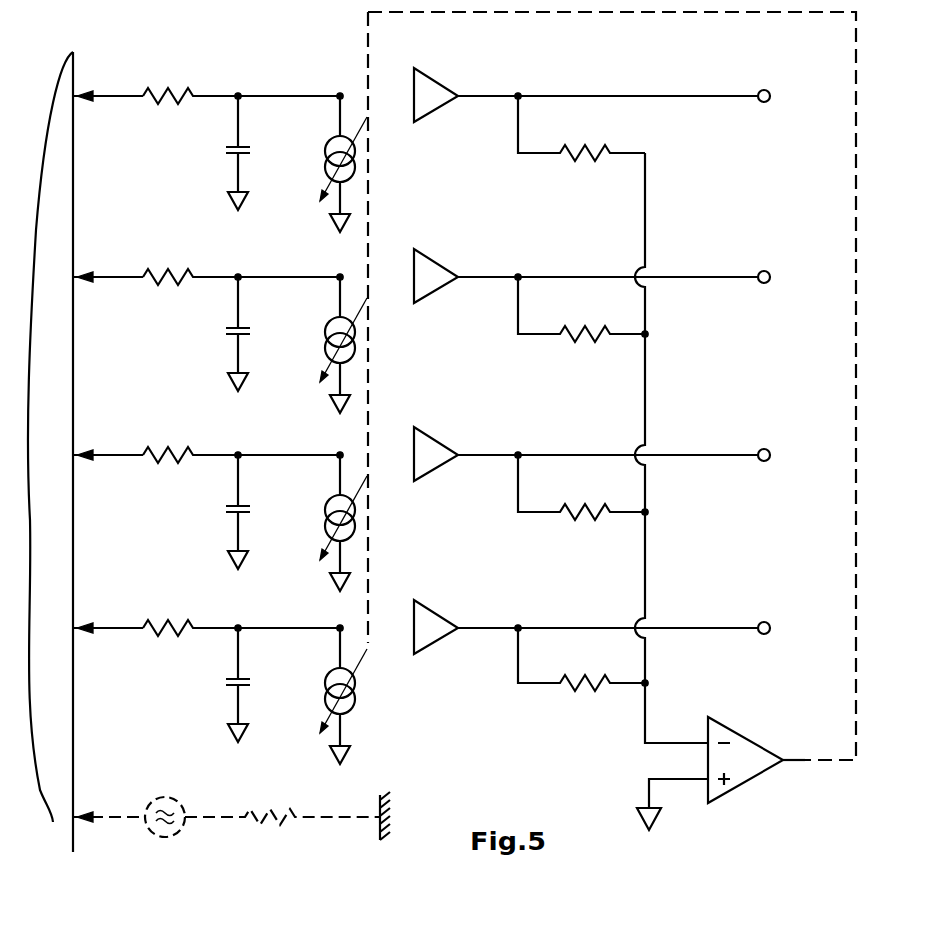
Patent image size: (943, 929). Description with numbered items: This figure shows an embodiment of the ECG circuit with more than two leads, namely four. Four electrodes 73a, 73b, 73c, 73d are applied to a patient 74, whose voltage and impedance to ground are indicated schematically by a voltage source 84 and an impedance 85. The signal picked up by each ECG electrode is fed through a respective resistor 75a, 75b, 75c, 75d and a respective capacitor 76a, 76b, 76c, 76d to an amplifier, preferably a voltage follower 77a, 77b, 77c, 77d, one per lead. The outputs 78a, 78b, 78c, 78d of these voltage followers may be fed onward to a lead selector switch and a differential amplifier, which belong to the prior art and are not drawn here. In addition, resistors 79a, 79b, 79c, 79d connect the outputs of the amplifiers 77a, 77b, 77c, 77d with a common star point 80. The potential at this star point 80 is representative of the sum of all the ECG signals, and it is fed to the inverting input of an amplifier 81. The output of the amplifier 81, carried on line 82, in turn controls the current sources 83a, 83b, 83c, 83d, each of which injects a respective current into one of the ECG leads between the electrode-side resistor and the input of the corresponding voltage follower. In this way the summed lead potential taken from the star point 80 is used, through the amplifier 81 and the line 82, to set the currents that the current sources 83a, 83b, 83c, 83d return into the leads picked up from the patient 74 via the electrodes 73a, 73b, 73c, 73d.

The electrode 73a is at (82, 93).
The electrode 73b is at (82, 274).
The electrode 73c is at (82, 452).
The electrode 73d is at (82, 625).
The patient 74 is at (53, 800).
The resistor 75a is at (161, 88).
The resistor 75b is at (161, 269).
The resistor 75c is at (161, 447).
The resistor 75d is at (161, 620).
The capacitor 76a is at (243, 148).
The capacitor 76b is at (243, 329).
The capacitor 76c is at (243, 507).
The capacitor 76d is at (243, 680).
The voltage follower 77a is at (430, 108).
The voltage follower 77b is at (430, 289).
The voltage follower 77c is at (430, 467).
The voltage follower 77d is at (430, 640).
The output 78a is at (767, 102).
The output 78b is at (767, 283).
The output 78c is at (767, 461).
The output 78d is at (767, 634).
The resistor 79a is at (592, 162).
The resistor 79b is at (592, 343).
The resistor 79c is at (592, 521).
The resistor 79d is at (592, 692).
The star point 80 is at (646, 400).
The amplifier 81 is at (738, 784).
The line 82 is at (828, 763).
The current source 83a is at (327, 171).
The current source 83b is at (327, 352).
The current source 83c is at (327, 530).
The current source 83d is at (327, 703).
The voltage source 84 is at (178, 832).
The impedance 85 is at (275, 826).